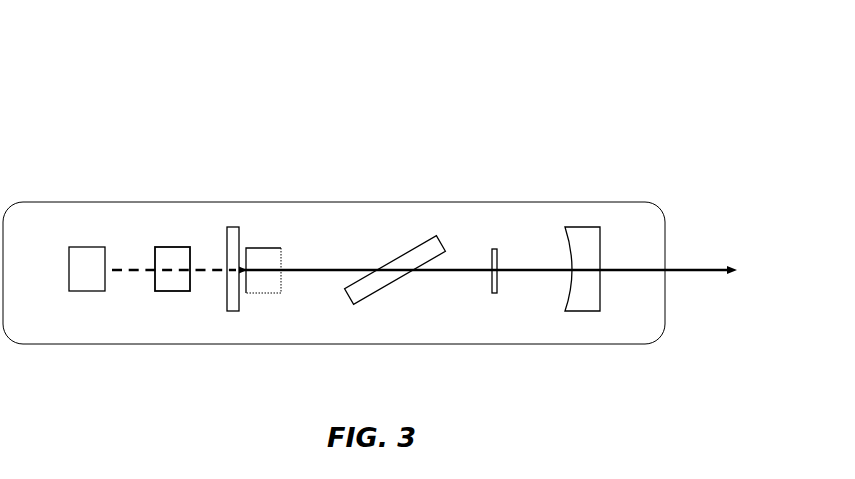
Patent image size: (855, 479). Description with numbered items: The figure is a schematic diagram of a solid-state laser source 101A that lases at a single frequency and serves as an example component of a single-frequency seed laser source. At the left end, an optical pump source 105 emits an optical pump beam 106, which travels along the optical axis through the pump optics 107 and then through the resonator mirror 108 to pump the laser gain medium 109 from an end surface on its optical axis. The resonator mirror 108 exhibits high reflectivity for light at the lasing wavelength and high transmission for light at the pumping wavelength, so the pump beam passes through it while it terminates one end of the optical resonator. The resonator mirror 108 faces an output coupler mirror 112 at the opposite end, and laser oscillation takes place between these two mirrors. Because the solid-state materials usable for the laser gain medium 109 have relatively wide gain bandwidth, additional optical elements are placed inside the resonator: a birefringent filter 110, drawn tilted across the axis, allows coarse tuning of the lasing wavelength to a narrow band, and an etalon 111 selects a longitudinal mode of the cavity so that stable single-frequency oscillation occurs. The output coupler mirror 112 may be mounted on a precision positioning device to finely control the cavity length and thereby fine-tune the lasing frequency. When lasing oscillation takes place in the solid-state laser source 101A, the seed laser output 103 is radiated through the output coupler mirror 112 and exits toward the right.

The solid-state laser source 101A is at (120, 136).
The seed laser output 103 is at (683, 262).
The optical pump source 105 is at (82, 293).
The optical pump beam 106 is at (136, 272).
The pump optics 107 is at (166, 243).
The resonator mirror 108 is at (233, 227).
The laser gain medium 109 is at (270, 245).
The birefringent filter 110 is at (404, 243).
The etalon 111 is at (491, 248).
The output coupler mirror 112 is at (573, 227).